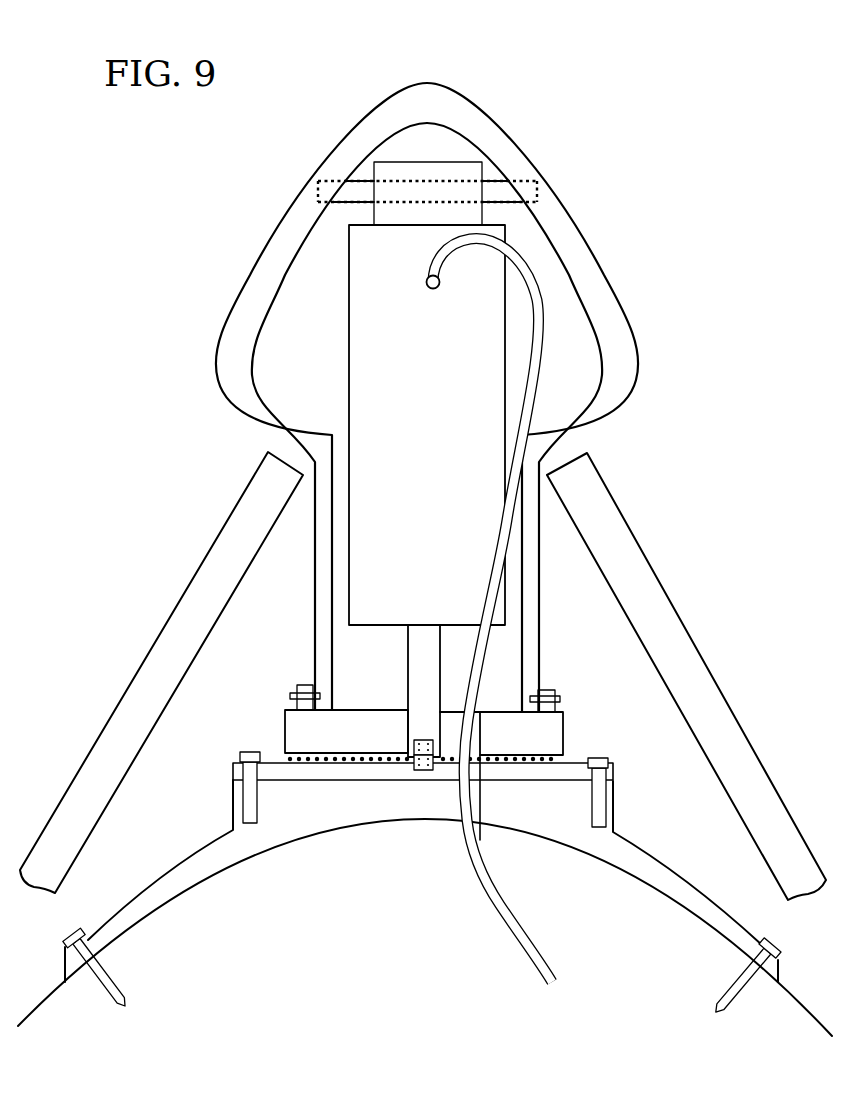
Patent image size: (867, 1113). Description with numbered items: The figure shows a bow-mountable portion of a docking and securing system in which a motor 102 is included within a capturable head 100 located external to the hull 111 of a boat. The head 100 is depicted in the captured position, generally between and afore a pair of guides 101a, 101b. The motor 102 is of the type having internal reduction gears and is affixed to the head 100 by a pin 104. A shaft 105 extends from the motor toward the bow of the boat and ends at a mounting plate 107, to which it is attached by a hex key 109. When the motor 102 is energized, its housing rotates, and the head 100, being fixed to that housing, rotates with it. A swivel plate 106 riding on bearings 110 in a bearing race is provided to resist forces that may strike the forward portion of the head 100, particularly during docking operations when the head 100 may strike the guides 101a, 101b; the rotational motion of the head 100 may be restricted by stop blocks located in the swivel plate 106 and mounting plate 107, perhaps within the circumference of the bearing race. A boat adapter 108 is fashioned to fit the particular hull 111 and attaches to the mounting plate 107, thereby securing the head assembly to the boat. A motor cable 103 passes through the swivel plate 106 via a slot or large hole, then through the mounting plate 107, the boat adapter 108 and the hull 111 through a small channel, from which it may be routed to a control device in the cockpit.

The head 100 is at (500, 84).
The guide 101a is at (170, 613).
The guide 101b is at (678, 614).
The motor 102 is at (446, 428).
The motor cable 103 is at (506, 927).
The pin 104 is at (495, 190).
The shaft 105 is at (418, 673).
The swivel plate 106 is at (556, 731).
The mounting plate 107 is at (273, 768).
The boat adapter 108 is at (195, 867).
The hex key 109 is at (427, 773).
The bearings 110 is at (580, 757).
The hull 111 is at (800, 1018).